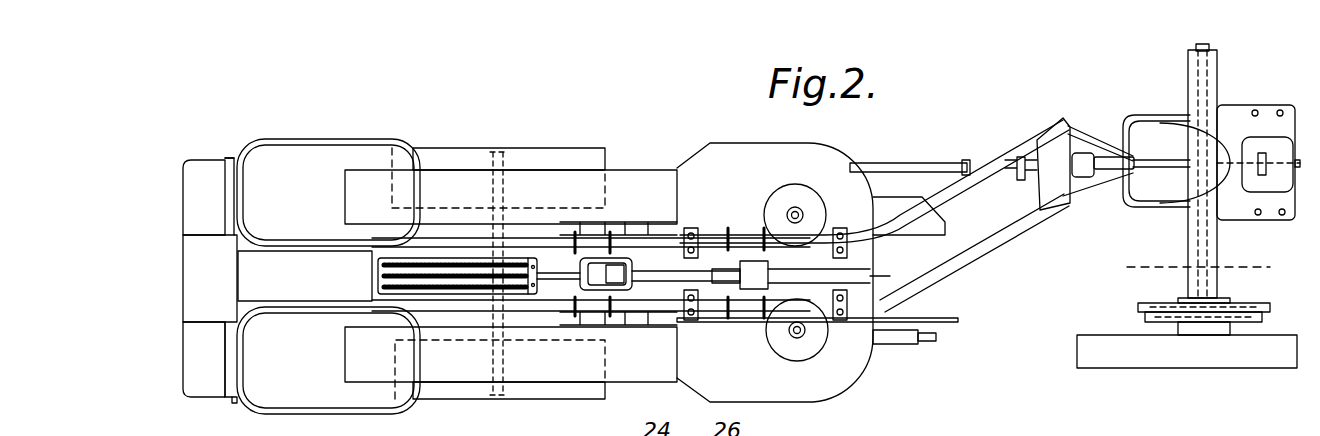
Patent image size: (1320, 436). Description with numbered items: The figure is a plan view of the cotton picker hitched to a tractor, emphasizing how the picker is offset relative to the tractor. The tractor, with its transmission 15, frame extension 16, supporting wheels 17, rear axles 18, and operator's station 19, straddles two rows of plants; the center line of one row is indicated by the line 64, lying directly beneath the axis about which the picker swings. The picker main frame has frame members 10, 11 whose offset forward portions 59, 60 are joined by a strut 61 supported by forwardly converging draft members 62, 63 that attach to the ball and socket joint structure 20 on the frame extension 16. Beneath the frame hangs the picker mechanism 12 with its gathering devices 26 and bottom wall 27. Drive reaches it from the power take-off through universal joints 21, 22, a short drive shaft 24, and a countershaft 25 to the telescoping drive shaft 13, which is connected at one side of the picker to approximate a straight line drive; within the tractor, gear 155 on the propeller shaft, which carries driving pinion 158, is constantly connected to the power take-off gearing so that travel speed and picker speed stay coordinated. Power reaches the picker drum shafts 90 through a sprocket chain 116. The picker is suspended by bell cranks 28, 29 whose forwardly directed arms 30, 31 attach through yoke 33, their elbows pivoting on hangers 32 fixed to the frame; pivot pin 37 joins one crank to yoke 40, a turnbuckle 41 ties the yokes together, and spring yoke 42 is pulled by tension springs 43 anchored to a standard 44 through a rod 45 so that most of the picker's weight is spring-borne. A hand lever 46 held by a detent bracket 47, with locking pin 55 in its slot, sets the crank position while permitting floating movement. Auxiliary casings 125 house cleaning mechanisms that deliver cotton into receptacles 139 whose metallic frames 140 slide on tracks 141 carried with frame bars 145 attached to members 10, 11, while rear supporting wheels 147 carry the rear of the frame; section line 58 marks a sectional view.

The frame member 10 is at (836, 235).
The frame member 11 is at (882, 343).
The picker mechanism 12 is at (882, 350).
The telescoping drive shaft 13 is at (926, 163).
The transmission 15 is at (1256, 200).
The frame extension 16 is at (1176, 222).
The supporting wheels 17 is at (1118, 335).
The rear axles 18 is at (1212, 54).
The operator's station 19 is at (1122, 175).
The ball and socket joint structure 20 is at (1150, 148).
The universal joint 21 is at (1022, 178).
The universal joint 22 is at (1080, 178).
The short drive shaft 24 is at (1160, 212).
The countershaft 25 is at (1000, 237).
The gathering devices 26 is at (945, 323).
The bottom wall 27 is at (910, 197).
The bell crank 28 is at (838, 342).
The bell crank 29 is at (615, 301).
The forwardly directed arm 30 is at (765, 269).
The forwardly directed arm 31 is at (665, 287).
The hangers 32 is at (585, 311).
The yoke 33 is at (934, 226).
The pivot pin 37 is at (752, 258).
The yoke 40 is at (718, 306).
The turnbuckle 41 is at (642, 293).
The spring yoke 42 is at (567, 256).
The tension springs 43 is at (412, 311).
The standard 44 is at (382, 268).
The rod 45 is at (545, 292).
The hand lever 46 is at (955, 318).
The detent bracket 47 is at (722, 306).
The locking pin 55 is at (695, 268).
The section line 58 is at (372, 264).
The offset forward portion 59 is at (658, 238).
The offset forward portion 60 is at (1004, 238).
The strut 61 is at (1050, 135).
The draft member 62 is at (1070, 128).
The draft member 63 is at (1085, 205).
The row center line 64 is at (1196, 273).
The picker drum shafts 90 is at (797, 212).
The sprocket chain 116 is at (492, 160).
The auxiliary casings 125 is at (612, 180).
The receptacles 139 is at (280, 160).
The metallic frames 140 is at (333, 140).
The tracks 141 is at (229, 156).
The frame bars 145 is at (183, 266).
The rear supporting wheels 147 is at (575, 150).
The gear 155 is at (1240, 120).
The driving pinion 158 is at (1222, 140).